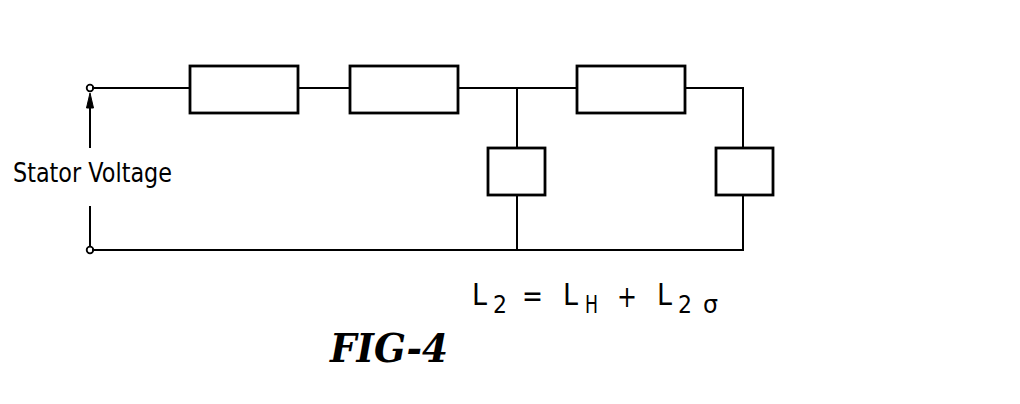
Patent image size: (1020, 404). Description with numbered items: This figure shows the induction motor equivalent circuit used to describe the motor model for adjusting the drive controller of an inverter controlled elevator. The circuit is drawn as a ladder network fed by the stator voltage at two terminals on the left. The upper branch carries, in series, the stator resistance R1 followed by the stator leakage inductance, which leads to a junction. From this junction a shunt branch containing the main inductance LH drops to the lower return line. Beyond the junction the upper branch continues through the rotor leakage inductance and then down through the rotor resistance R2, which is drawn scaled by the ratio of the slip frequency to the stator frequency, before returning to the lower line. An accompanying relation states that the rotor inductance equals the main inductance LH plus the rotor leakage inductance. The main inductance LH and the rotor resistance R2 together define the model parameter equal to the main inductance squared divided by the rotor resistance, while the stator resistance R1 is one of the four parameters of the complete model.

The stator resistance R1 is at (244, 61).
The main inductance LH is at (545, 171).
The rotor resistance R2 is at (883, 172).